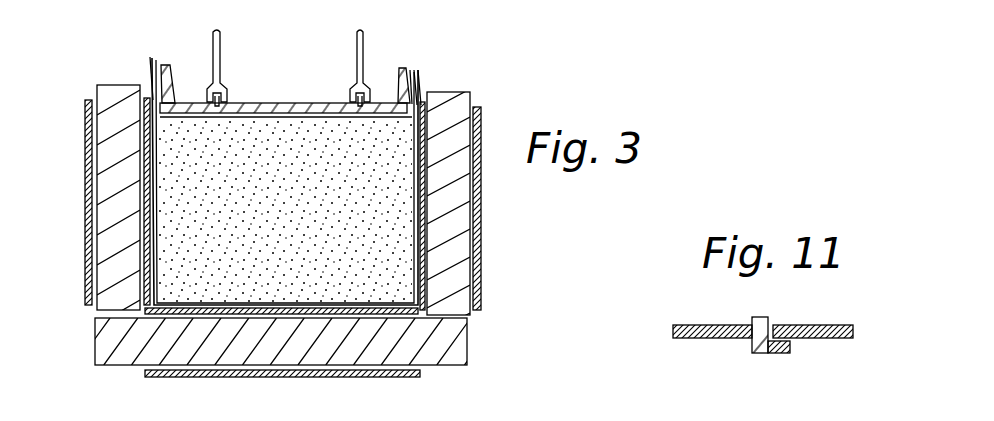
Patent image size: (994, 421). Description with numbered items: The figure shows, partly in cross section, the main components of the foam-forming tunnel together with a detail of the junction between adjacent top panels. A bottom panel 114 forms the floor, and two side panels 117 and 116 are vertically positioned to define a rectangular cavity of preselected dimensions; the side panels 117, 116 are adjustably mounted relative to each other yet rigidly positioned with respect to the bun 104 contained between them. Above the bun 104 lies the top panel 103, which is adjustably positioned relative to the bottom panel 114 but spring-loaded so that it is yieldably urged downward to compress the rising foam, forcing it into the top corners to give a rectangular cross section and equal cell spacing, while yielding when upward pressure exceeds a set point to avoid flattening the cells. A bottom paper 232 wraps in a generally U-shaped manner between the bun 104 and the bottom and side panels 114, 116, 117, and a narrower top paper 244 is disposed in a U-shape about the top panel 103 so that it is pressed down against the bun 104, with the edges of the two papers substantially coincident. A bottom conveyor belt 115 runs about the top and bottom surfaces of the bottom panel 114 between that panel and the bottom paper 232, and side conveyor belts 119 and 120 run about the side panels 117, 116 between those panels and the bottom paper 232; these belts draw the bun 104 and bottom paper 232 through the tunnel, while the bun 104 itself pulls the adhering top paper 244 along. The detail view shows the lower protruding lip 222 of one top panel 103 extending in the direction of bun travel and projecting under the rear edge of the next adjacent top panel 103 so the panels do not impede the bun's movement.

In FIG. 3, the top panel 103 is at (287, 103).
In FIG. 11, the top panel 103 is at (718, 325).
In FIG. 3, the bun 104 is at (292, 225).
In FIG. 3, the bottom panel 114 is at (97, 345).
In FIG. 3, the bottom conveyor belt 115 is at (290, 318).
In FIG. 3, the side panel 116 is at (470, 233).
In FIG. 3, the side panel 117 is at (100, 208).
In FIG. 3, the side conveyor belt 119 is at (480, 135).
In FIG. 3, the side conveyor belt 120 is at (85, 130).
In FIG. 11, the lower protruding lip 222 is at (773, 354).
In FIG. 3, the bottom paper 232 is at (421, 70).
In FIG. 3, the top paper 244 is at (413, 70).